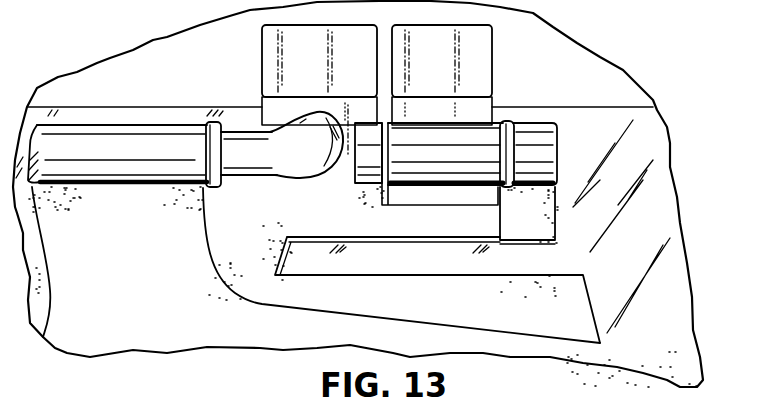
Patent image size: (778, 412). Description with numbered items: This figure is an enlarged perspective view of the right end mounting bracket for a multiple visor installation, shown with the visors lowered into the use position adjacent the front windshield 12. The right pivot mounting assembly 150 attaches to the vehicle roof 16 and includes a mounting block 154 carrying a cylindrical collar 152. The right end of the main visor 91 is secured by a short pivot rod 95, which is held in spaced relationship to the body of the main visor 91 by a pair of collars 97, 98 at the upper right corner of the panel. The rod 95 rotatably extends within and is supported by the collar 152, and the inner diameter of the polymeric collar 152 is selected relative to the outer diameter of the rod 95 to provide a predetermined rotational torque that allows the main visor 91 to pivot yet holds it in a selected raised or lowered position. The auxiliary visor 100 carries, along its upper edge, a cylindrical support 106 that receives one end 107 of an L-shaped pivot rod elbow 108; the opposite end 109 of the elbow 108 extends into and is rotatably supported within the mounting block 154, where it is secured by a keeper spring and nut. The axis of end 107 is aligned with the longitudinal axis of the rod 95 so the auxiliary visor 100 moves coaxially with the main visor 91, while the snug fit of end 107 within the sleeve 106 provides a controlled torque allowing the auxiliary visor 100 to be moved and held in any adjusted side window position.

The front windshield 12 is at (672, 323).
The vehicle roof 16 is at (214, 66).
The main visor 91 is at (573, 273).
The short pivot rod 95 is at (400, 163).
The collar 97 is at (360, 190).
The collar 98 is at (557, 143).
The auxiliary visor 100 is at (300, 334).
The cylindrical support 106 is at (148, 190).
The end of pivot rod elbow 107 is at (268, 166).
The pivot rod elbow 108 is at (292, 123).
The opposite end of elbow 109 is at (335, 113).
The right pivot mounting assembly 150 is at (499, 118).
The cylindrical collar 152 is at (437, 133).
The mounting block 154 is at (412, 32).